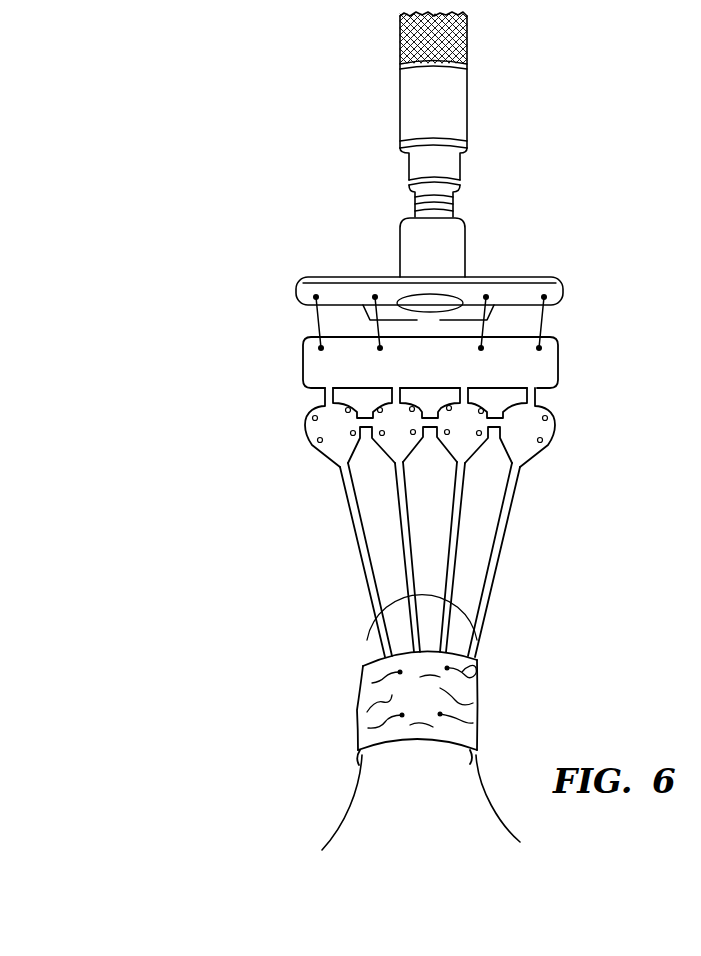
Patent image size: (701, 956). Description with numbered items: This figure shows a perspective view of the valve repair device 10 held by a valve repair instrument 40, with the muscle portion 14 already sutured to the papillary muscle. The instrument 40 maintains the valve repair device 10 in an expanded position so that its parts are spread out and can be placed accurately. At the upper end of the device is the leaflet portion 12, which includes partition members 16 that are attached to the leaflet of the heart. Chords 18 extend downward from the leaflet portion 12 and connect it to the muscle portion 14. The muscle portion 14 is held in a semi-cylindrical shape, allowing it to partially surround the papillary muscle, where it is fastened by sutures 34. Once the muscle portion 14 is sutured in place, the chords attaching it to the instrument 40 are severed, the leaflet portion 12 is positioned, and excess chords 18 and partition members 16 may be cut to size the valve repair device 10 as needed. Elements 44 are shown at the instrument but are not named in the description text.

The valve repair device 10 is at (435, 431).
The leaflet portion 12 is at (560, 431).
The muscle portion 14 is at (482, 708).
The partition member 16 is at (316, 431).
The chords 18 is at (505, 512).
The sutures 34 is at (462, 672).
The valve repair instrument 40 is at (386, 124).
The connecting pins 44 is at (543, 318).